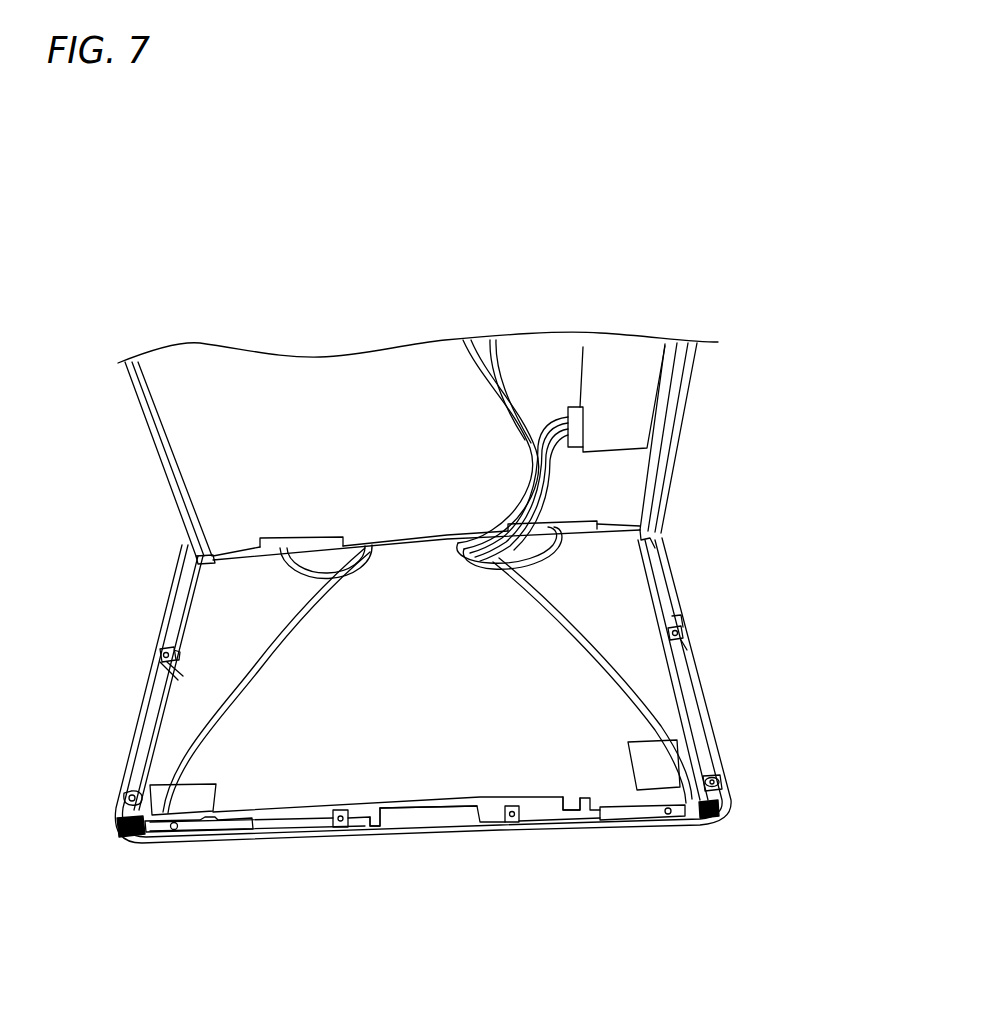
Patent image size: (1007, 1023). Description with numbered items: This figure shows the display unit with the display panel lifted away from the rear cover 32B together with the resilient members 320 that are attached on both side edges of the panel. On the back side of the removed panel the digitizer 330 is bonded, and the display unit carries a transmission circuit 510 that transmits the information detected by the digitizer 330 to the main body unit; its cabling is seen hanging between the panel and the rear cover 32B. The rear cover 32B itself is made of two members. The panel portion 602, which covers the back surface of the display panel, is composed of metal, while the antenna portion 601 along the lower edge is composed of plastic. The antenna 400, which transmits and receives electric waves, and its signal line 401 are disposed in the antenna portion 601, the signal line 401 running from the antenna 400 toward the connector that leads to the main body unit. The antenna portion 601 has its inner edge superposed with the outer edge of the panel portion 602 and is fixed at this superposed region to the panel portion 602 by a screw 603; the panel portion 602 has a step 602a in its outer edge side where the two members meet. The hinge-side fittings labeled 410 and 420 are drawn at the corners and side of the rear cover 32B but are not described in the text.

The resilient member 320 is at (682, 423).
The digitizer 330 is at (634, 486).
The transmission circuit 510 is at (612, 362).
The rear cover 32B is at (310, 850).
The antenna portion 601 is at (444, 822).
The panel portion 602 is at (491, 777).
The step 602a is at (397, 803).
The screw 603 is at (513, 820).
The antenna 400 is at (226, 828).
The right hinge 410 is at (690, 823).
The signal line 401 is at (205, 708).
The right clip 420 is at (678, 658).